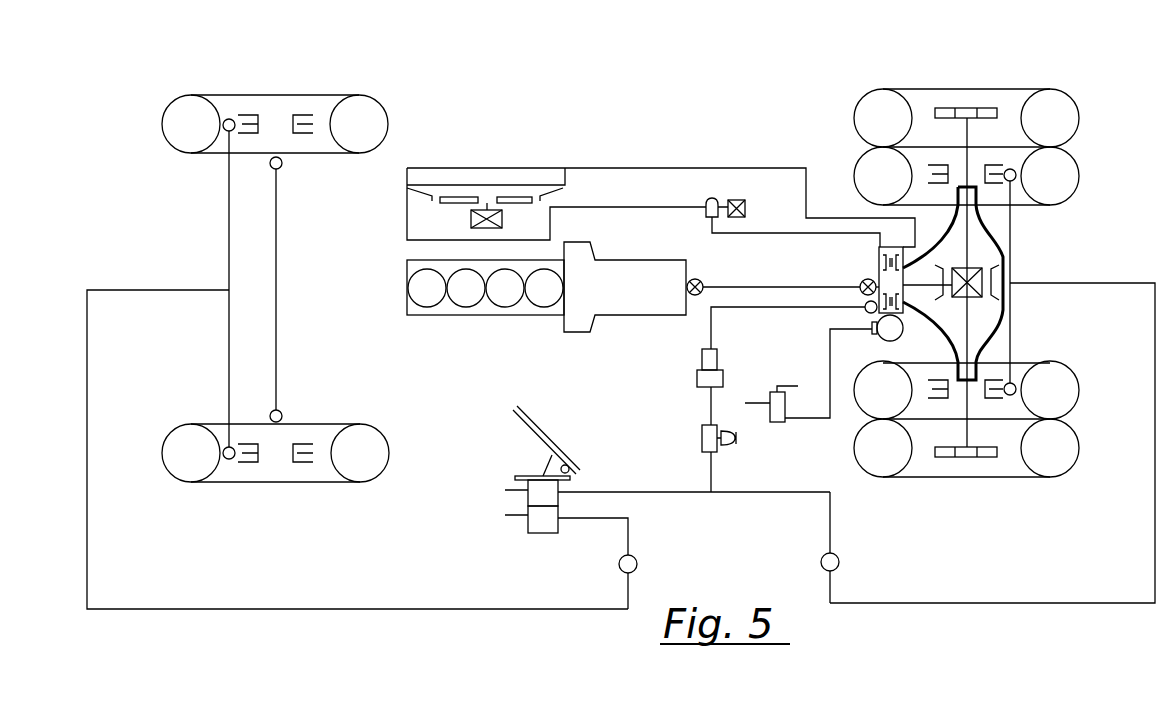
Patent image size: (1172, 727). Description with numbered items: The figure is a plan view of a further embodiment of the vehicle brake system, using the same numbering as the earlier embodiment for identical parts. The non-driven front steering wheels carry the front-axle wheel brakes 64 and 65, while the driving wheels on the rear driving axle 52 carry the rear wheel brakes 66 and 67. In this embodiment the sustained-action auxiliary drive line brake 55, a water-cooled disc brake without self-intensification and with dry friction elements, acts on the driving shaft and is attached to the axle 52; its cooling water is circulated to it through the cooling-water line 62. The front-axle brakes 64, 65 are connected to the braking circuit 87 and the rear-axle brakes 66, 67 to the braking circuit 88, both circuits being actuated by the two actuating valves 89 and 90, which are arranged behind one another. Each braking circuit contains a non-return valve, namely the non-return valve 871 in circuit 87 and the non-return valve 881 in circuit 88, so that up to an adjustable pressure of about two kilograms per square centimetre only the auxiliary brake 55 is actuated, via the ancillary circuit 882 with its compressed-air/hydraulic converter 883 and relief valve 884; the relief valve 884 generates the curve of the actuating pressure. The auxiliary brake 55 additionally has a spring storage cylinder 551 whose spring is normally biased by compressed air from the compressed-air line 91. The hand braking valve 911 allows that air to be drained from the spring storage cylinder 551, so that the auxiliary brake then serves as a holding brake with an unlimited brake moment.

The driving axle 52 is at (1002, 242).
The auxiliary drive line brake 55 is at (879, 260).
The spring storage cylinder 551 is at (886, 338).
The cooling-water line 62 is at (648, 167).
The front wheel brake 64 is at (293, 123).
The front wheel brake 65 is at (262, 455).
The driving wheel brake 66 is at (928, 170).
The driving wheel brake 67 is at (932, 405).
The braking circuit 87 is at (355, 609).
The non-return valve 871 is at (637, 563).
The braking circuit 88 is at (921, 603).
The non-return valve 881 is at (821, 562).
The ancillary circuit 882 is at (711, 478).
The compressed-air/hydraulic converter 883 is at (702, 359).
The relief valve 884 is at (705, 437).
The actuating valve 89 is at (538, 497).
The actuating valve 90 is at (545, 523).
The compressed-air line 91 is at (828, 362).
The hand braking valve 911 is at (770, 400).